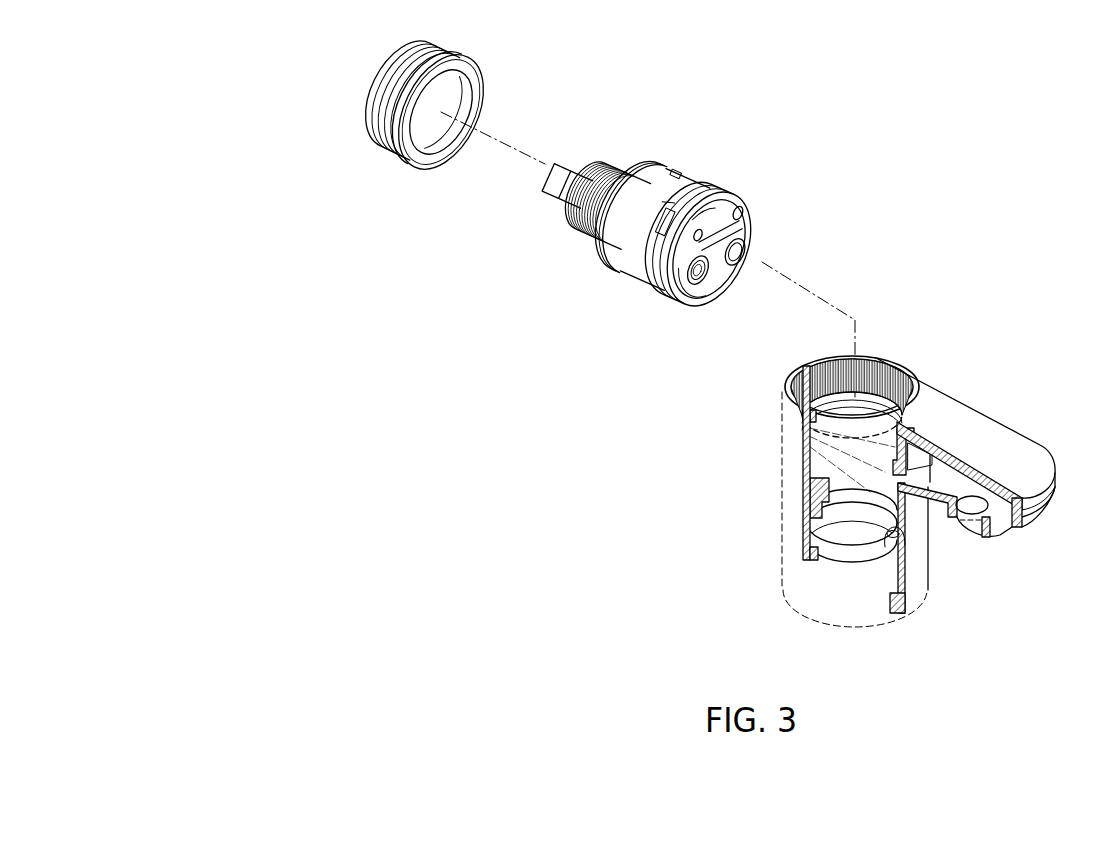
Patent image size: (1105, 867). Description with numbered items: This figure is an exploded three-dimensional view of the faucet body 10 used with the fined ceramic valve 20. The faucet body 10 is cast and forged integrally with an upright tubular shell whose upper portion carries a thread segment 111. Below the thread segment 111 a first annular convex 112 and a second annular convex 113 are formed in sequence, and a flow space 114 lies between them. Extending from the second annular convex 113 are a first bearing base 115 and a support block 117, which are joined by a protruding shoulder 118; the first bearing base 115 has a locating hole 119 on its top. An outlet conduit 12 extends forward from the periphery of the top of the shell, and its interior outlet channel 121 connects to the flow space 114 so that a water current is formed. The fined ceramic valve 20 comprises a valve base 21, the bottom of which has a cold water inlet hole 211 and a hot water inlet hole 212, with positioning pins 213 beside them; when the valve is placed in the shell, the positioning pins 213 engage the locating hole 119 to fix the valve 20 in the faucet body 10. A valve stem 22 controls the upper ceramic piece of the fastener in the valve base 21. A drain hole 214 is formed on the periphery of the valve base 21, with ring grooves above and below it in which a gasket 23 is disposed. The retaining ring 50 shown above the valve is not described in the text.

The faucet body 10 is at (925, 611).
The outlet conduit 12 is at (1012, 440).
The fined ceramic valve 20 is at (563, 150).
The valve base 21 is at (713, 293).
The valve stem 22 is at (535, 186).
The gasket 23 is at (620, 187).
The threaded retaining nut 50 is at (365, 99).
The thread segment 111 is at (882, 368).
The first annular convex 112 is at (806, 417).
The second annular convex 113 is at (807, 488).
The flow space 114 is at (803, 453).
The first bearing base 115 is at (903, 560).
The support block 117 is at (810, 518).
The protruding shoulder 118 is at (850, 506).
The locating hole 119 is at (907, 513).
The outlet channel 121 is at (1012, 518).
The cold water inlet hole 211 is at (683, 273).
The hot water inlet hole 212 is at (745, 250).
The positioning pin 213 is at (742, 213).
The drain hole 214 is at (683, 197).